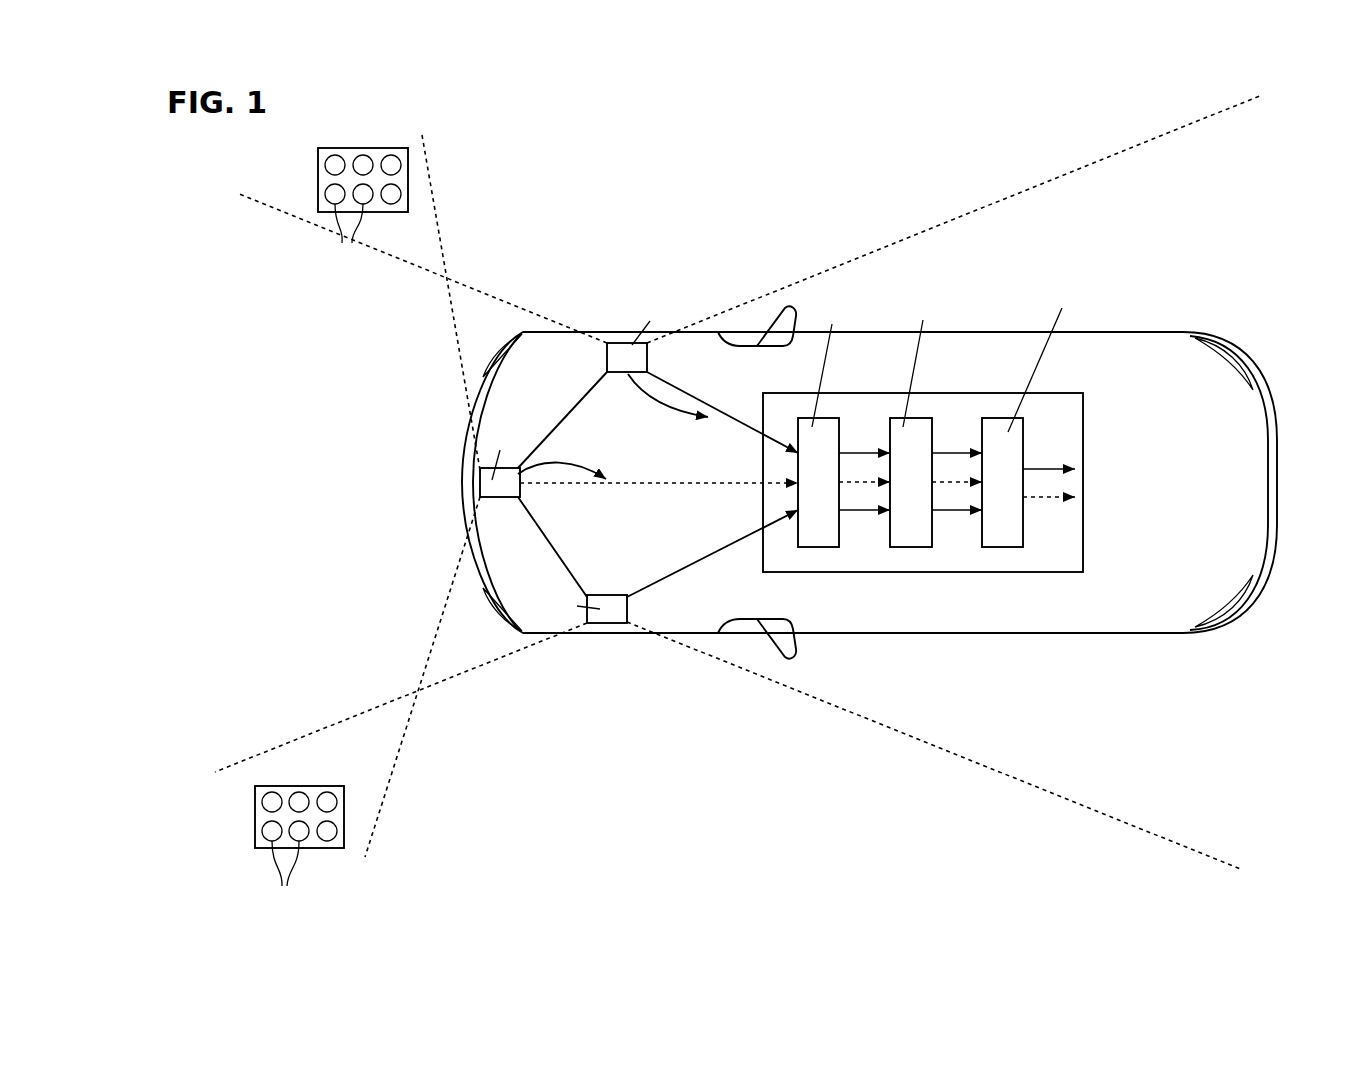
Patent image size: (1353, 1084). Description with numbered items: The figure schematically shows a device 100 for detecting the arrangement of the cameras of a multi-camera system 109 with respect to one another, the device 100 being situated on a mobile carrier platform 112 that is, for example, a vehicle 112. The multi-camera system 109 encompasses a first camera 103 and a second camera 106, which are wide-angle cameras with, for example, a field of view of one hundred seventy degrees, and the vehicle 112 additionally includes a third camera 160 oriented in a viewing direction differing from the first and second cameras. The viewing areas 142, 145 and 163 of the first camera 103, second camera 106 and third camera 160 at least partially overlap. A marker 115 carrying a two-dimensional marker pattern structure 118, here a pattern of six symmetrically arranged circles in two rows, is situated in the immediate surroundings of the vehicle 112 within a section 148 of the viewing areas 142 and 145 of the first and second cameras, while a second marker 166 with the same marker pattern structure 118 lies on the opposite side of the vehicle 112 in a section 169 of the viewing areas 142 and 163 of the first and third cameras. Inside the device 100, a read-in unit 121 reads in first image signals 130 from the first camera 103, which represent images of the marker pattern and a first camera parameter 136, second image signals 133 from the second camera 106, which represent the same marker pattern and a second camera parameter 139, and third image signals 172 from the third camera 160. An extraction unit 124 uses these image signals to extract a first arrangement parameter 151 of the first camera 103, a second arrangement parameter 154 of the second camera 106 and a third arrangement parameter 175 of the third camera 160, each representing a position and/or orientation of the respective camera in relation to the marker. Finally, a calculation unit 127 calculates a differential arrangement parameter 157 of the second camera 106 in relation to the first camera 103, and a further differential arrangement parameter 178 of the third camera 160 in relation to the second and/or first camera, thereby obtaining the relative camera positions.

The device 100 is at (850, 482).
The first camera 103 is at (480, 483).
The second camera 106 is at (626, 344).
The multi-camera system 109 is at (583, 397).
The mobile carrier platform 112 is at (1193, 399).
The marker 115 is at (408, 198).
The marker pattern structure 118 is at (314, 564).
The read-in unit 121 is at (807, 538).
The extraction unit 124 is at (905, 538).
The calculation unit 127 is at (1010, 538).
The first image signals 130 is at (650, 480).
The second image signals 133 is at (730, 392).
The first camera parameter 136 is at (565, 477).
The second camera parameter 139 is at (662, 398).
The viewing area 142 is at (300, 482).
The viewing area 145 is at (712, 262).
The section 148 is at (335, 177).
The first arrangement parameter 151 is at (957, 480).
The second arrangement parameter 154 is at (938, 452).
The differential arrangement parameter 157 is at (1043, 467).
The third camera 160 is at (610, 620).
The viewing area 163 is at (698, 733).
The second marker 166 is at (344, 838).
The section 169 is at (288, 839).
The third image signals 172 is at (688, 560).
The third arrangement parameter 175 is at (950, 512).
The differential arrangement parameter 178 is at (1047, 498).